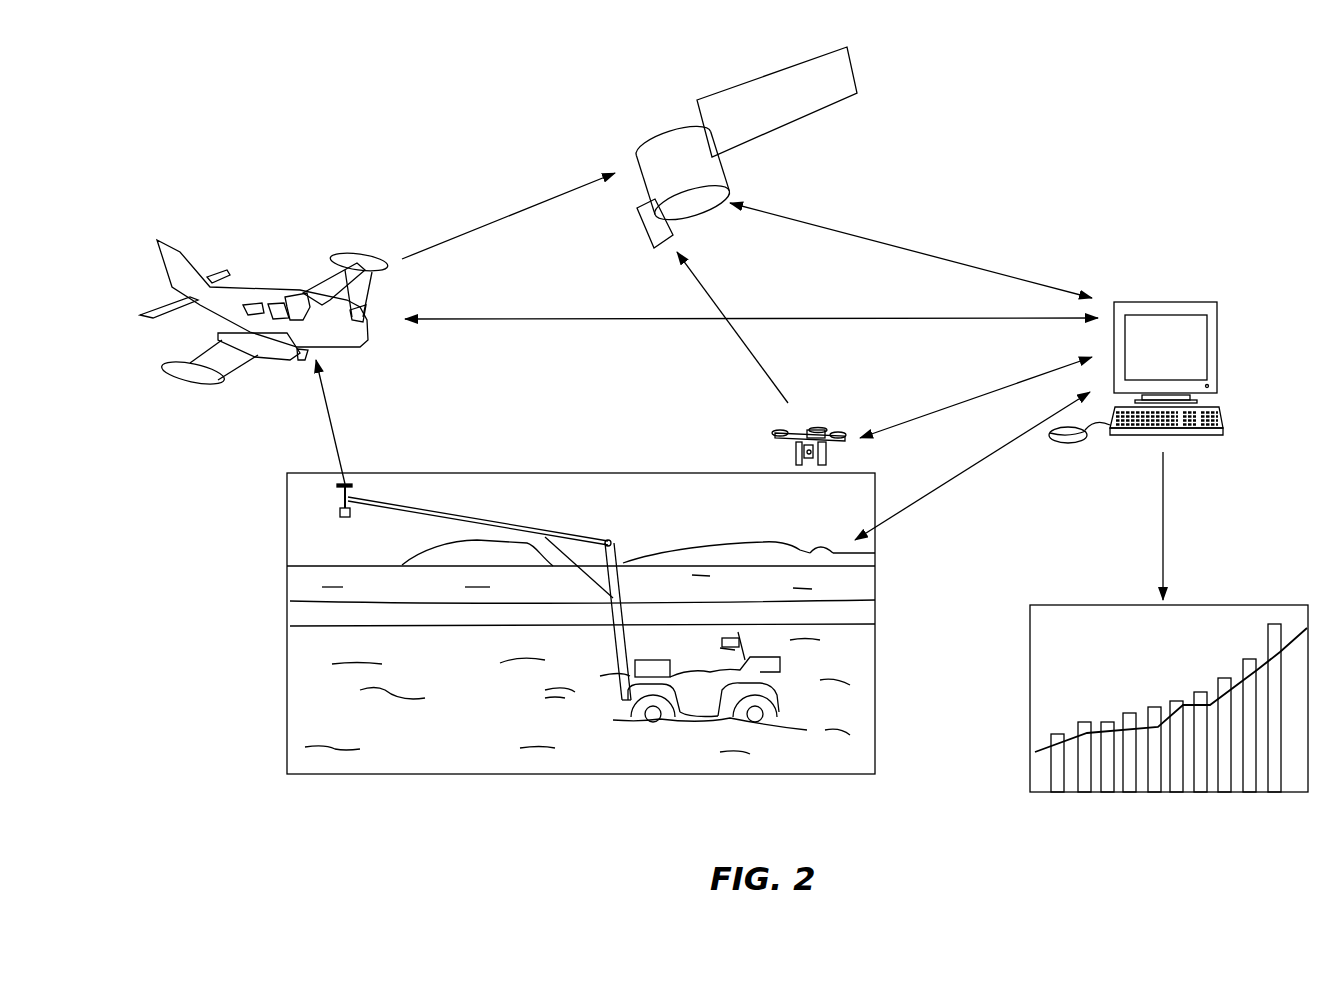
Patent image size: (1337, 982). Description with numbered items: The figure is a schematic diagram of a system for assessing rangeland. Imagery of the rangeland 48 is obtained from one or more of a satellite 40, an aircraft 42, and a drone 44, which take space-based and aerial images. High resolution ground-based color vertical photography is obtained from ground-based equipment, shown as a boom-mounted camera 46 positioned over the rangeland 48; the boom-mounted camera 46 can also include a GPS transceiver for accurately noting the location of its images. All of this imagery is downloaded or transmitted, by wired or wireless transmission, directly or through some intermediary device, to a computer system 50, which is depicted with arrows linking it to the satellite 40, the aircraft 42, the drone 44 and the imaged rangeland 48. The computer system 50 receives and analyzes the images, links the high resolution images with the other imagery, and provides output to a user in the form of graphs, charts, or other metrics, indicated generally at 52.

The satellite 40 is at (662, 150).
The aircraft 42 is at (282, 293).
The drone 44 is at (817, 428).
The boom-mounted camera 46 is at (338, 512).
The rangeland 48 is at (408, 614).
The computer system 50 is at (1203, 302).
The output (graphs, charts, or other metrics) 52 is at (1045, 663).